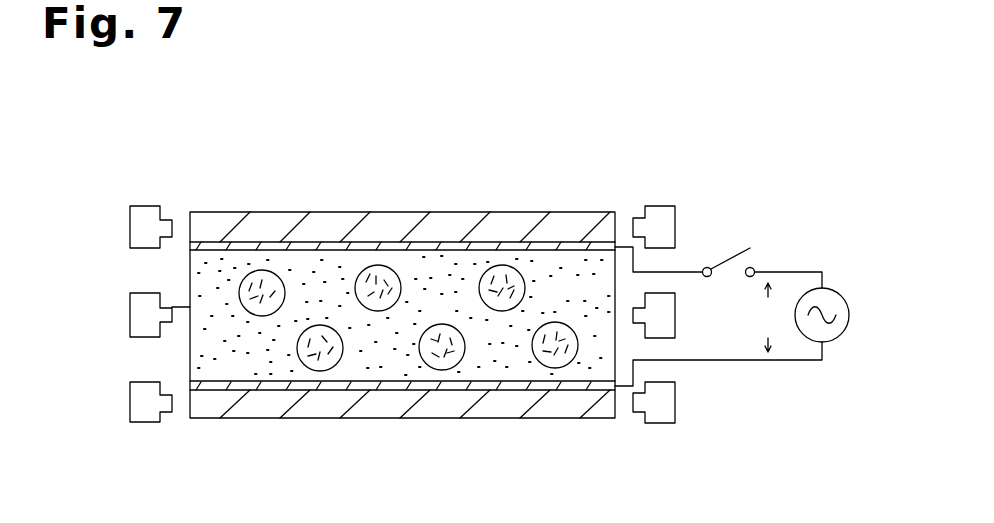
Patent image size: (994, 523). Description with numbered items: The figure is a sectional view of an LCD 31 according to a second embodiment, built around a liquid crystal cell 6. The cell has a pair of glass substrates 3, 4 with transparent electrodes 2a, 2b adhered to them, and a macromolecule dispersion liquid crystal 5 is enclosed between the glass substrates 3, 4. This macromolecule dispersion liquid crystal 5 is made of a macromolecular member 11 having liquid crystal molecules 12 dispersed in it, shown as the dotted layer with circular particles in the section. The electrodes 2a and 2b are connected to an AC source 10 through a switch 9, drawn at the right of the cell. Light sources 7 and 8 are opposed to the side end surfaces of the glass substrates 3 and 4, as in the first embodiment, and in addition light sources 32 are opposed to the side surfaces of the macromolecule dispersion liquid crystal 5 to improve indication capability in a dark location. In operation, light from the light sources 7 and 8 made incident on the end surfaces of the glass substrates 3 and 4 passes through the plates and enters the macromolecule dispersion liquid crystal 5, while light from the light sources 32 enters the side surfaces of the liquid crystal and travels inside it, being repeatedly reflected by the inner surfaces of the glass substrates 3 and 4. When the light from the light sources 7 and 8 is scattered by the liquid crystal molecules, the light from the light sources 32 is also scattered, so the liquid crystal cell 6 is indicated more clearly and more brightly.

The transparent electrode 2a is at (190, 247).
The transparent electrode 2b is at (190, 385).
The glass substrate 3 is at (283, 225).
The glass substrate 4 is at (262, 415).
The macromolecule dispersion liquid crystal 5 is at (190, 307).
The liquid crystal cell 6 is at (568, 212).
The light source 7 is at (142, 216).
The light source 8 is at (146, 425).
The switch 9 is at (727, 255).
The AC source 10 is at (838, 298).
The macromolecular member 11 is at (385, 362).
The liquid crystal molecules 12 is at (455, 368).
The LCD 31 is at (502, 198).
The light sources 32 is at (147, 313).